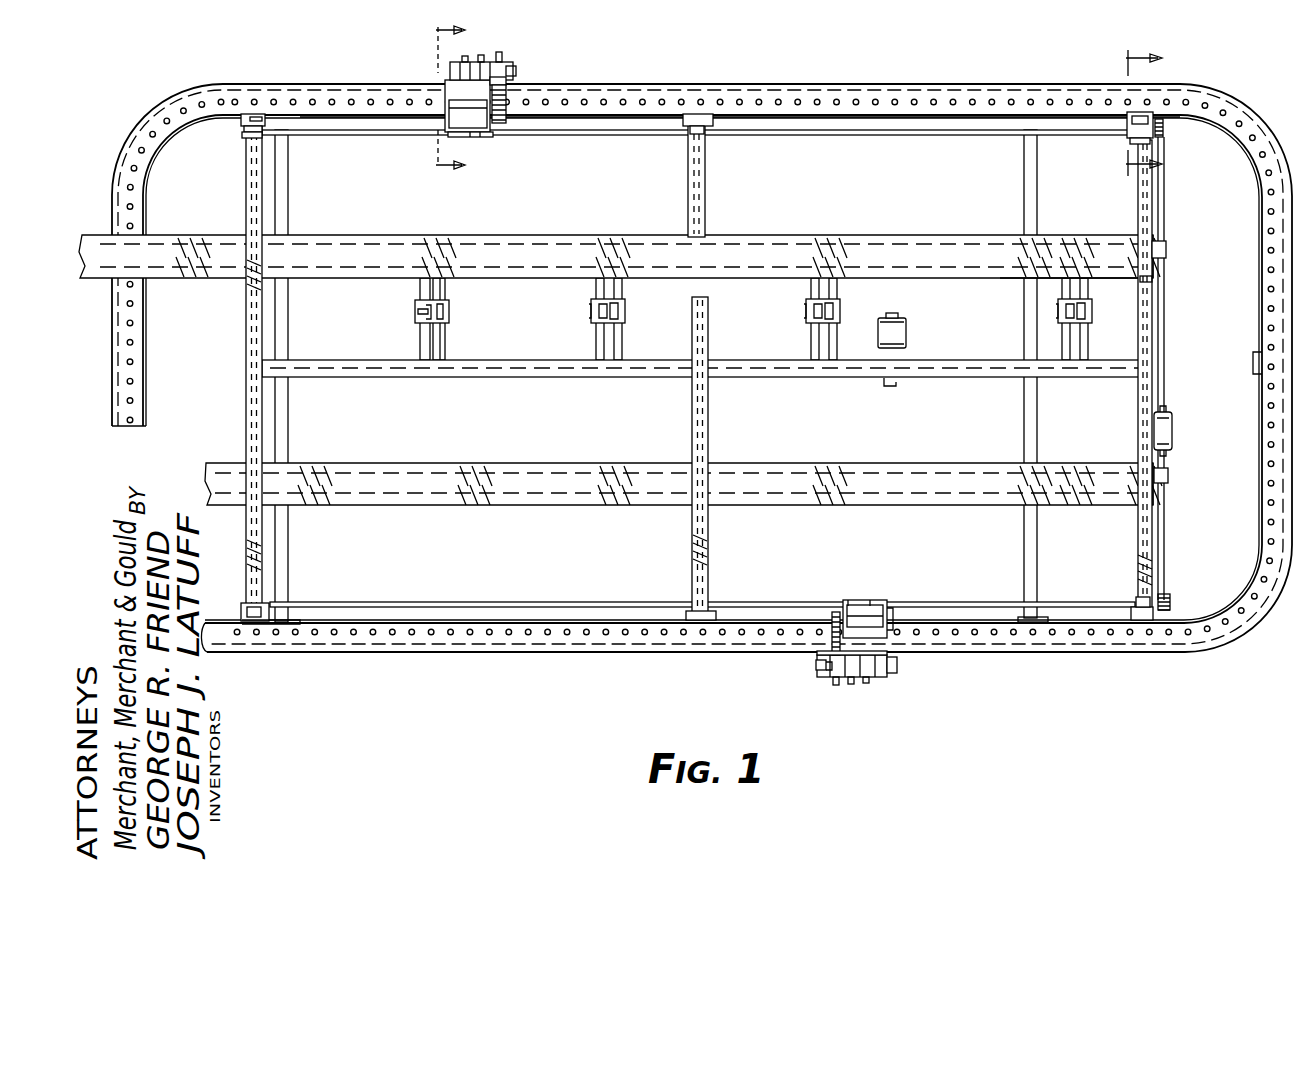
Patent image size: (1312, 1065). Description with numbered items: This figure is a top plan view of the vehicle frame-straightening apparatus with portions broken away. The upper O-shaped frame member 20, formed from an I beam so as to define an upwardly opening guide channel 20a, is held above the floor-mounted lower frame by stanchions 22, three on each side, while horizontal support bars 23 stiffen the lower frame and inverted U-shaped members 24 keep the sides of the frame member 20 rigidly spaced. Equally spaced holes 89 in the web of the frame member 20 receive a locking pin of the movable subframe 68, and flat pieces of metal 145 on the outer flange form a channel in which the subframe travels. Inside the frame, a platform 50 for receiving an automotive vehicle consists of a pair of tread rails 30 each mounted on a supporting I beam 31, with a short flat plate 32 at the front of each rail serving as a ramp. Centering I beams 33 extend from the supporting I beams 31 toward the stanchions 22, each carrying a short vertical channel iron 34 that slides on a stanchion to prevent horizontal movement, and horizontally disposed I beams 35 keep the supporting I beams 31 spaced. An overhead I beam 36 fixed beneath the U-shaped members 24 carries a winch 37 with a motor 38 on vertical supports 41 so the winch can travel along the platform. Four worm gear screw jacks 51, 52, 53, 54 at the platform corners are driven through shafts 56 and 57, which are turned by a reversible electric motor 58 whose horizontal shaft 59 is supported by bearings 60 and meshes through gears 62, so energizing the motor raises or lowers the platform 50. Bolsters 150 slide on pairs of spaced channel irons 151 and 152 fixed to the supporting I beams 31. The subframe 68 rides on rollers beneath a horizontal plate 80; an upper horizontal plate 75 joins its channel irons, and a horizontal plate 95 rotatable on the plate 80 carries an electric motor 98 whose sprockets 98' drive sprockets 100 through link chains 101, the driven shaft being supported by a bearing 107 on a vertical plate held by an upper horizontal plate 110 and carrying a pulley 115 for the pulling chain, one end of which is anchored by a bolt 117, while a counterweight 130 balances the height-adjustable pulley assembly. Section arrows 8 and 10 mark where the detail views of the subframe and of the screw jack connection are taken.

The upper O-shaped frame member 20 is at (865, 80).
The upwardly opening guide channel 20a is at (912, 92).
The stanchion 22 is at (260, 117).
The horizontal support bar 23 is at (287, 547).
The inverted U-shaped member 24 is at (247, 335).
The tread rail 30 is at (947, 236).
The supporting I beam 31 is at (912, 243).
The short flat plate 32 is at (190, 240).
The centering I beam 33 is at (706, 188).
The vertical channel iron 34 is at (240, 125).
The horizontally disposed I beam 35 is at (1150, 278).
The I beam 36 is at (983, 360).
The winch 37 is at (918, 328).
The motor 38 is at (905, 318).
The vertical support 41 is at (884, 382).
The platform 50 is at (905, 515).
The worm gear screw jack 51 is at (247, 603).
The worm gear screw jack 52 is at (1140, 597).
The worm gear screw jack 53 is at (1150, 140).
The worm gear screw jack 54 is at (240, 140).
The horizontal shaft 56 is at (877, 135).
The shaft 57 is at (933, 602).
The reversible electric motor 58 is at (1175, 428).
The horizontal shaft 59 is at (1165, 338).
The bearing 60 is at (1168, 247).
The gear 62 is at (1165, 128).
The subframe 68 is at (485, 141).
The upper horizontal plate 75 is at (462, 62).
The horizontal plate 80 is at (447, 97).
The holes 89 is at (642, 96).
The horizontal plate 95 is at (472, 137).
The electric motor 98 is at (683, 370).
The sprockets 98' is at (666, 370).
The sprockets 100 is at (502, 55).
The link chain 101 is at (507, 84).
The bearing 107 is at (815, 668).
The upper horizontal plate 110 is at (514, 62).
The pulley 115 is at (465, 58).
The bolt 117 is at (482, 55).
The counterweight 130 is at (890, 665).
The flat piece of metal 145 is at (782, 85).
The bolster 150 is at (459, 322).
The channel iron 151 is at (420, 343).
The channel iron 152 is at (447, 352).
The section line 8- 8 is at (433, 102).
The section line 10- 10 is at (1125, 114).